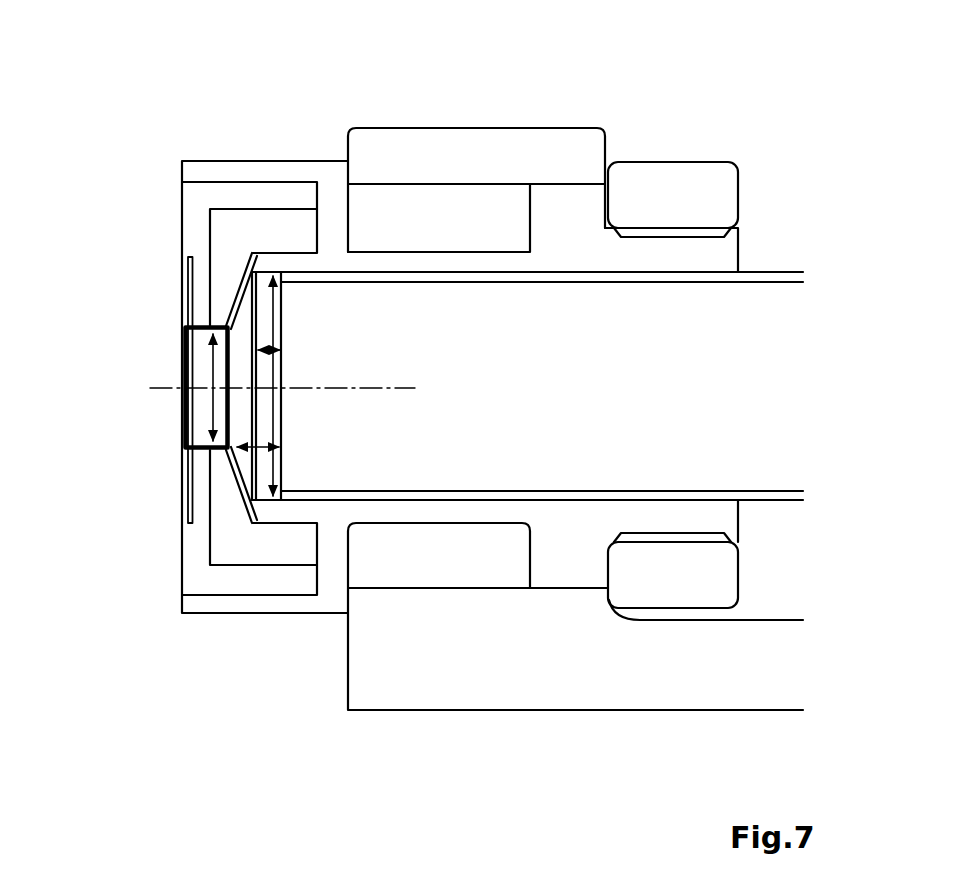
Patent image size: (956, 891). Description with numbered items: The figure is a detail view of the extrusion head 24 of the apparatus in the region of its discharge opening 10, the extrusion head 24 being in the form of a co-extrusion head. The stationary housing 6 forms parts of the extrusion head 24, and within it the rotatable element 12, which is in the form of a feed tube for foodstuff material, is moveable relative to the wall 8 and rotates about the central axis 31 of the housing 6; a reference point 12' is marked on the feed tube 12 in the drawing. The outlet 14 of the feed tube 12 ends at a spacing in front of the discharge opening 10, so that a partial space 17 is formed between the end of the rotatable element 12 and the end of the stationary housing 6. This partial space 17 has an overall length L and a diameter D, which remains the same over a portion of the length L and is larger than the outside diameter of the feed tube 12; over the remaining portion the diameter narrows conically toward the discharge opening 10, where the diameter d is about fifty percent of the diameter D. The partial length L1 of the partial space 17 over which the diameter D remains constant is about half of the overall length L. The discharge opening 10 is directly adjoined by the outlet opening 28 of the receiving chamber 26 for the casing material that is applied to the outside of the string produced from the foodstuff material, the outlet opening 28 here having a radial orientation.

The housing 6 is at (558, 213).
The wall 8 is at (415, 262).
The discharge opening 10 is at (222, 398).
The rotatable element 12 is at (536, 336).
The pipe outer surface 12' is at (490, 167).
The outlet 14 is at (284, 422).
The partial space 17 is at (245, 413).
The extrusion head 24 is at (267, 127).
The receiving chamber 26 is at (245, 547).
The outlet opening 28 is at (224, 455).
The central axis 31 is at (183, 388).
The diameter D is at (272, 322).
The diameter d is at (212, 358).
The length L is at (236, 450).
The partial length L1 is at (270, 352).